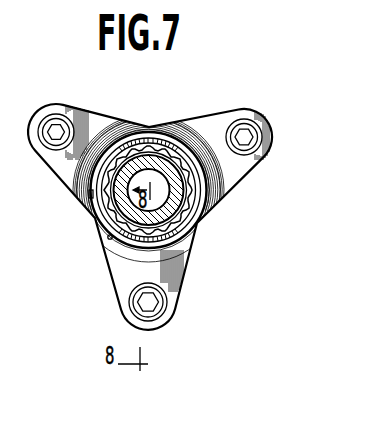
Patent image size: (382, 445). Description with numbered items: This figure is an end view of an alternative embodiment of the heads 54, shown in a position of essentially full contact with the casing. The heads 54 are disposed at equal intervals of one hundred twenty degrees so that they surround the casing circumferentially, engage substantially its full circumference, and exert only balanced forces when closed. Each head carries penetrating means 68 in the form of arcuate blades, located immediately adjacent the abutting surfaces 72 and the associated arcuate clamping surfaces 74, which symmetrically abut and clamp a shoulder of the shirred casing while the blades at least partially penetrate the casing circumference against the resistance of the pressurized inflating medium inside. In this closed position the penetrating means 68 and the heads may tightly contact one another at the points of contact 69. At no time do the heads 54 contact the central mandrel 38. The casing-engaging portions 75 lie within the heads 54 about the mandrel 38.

The heads 54 is at (263, 166).
The bearing housing 75 is at (118, 100).
The arcuate clamping surfaces 74 is at (170, 128).
The abutting surfaces 72 is at (150, 111).
The penetrating means 68 is at (92, 174).
The points of contact 69 is at (162, 128).
The mandrel 38 is at (181, 190).